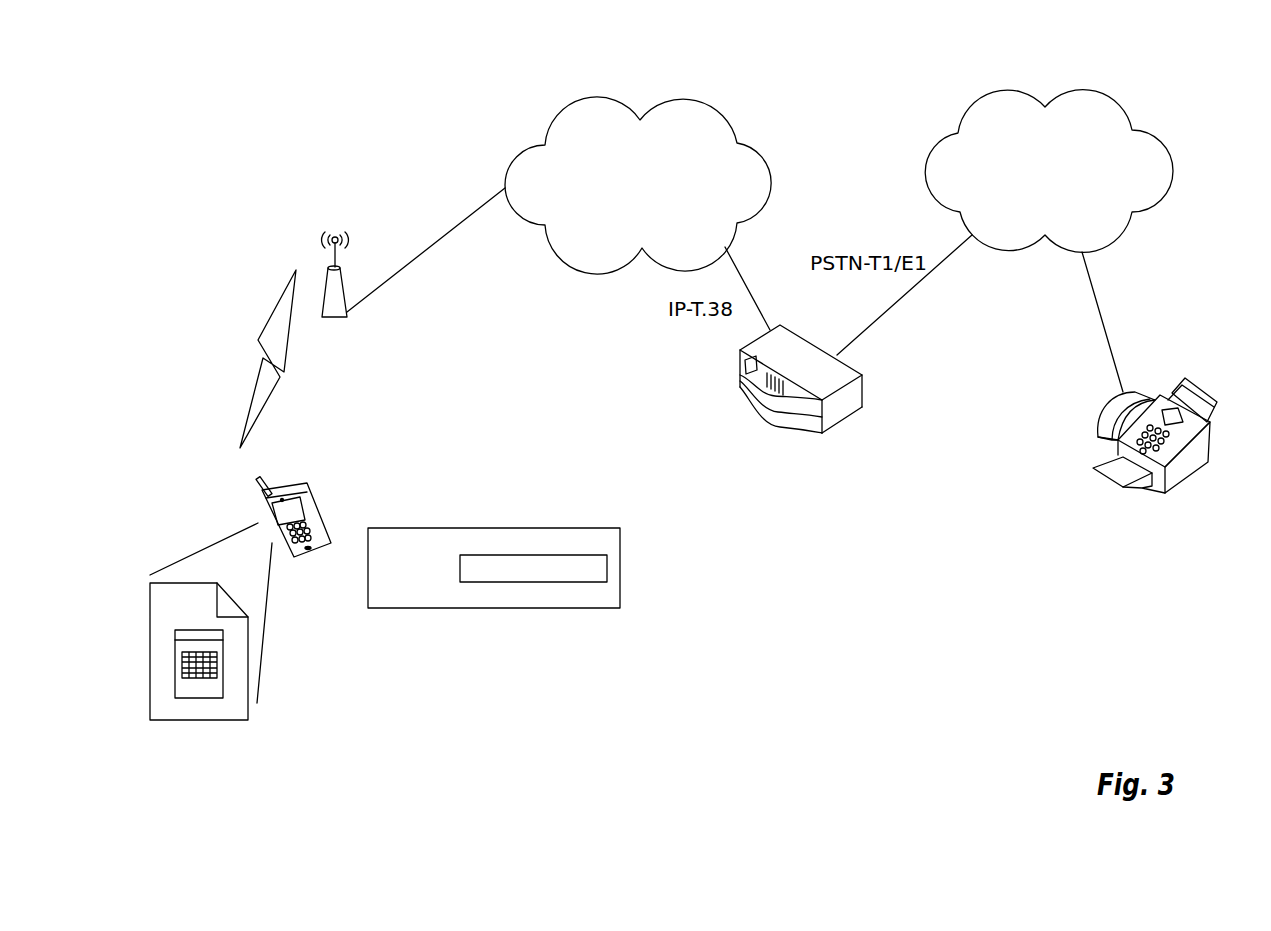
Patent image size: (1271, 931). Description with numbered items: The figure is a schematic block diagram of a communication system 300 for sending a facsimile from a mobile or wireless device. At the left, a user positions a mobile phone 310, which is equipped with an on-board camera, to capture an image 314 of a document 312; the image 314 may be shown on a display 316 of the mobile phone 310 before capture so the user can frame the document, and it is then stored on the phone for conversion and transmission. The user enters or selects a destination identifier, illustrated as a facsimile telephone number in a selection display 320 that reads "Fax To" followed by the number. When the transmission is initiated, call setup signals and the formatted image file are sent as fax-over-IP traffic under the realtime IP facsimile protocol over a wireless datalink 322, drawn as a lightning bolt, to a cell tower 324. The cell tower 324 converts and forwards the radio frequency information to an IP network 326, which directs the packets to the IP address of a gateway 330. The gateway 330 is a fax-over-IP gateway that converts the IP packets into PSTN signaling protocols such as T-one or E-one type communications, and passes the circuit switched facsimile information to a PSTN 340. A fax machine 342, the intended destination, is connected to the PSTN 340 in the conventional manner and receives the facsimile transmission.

The communication system 300 is at (780, 523).
The mobile phone 310 is at (324, 503).
The document 312 is at (213, 690).
The image 314 is at (205, 678).
The display 316 is at (293, 507).
The selection display 320 is at (475, 540).
The wireless datalink 322 is at (262, 360).
The cell tower 324 is at (340, 290).
The IP network 326 is at (585, 233).
The gateway 330 is at (843, 410).
The PSTN 340 is at (1012, 230).
The fax machine 342 is at (1188, 470).